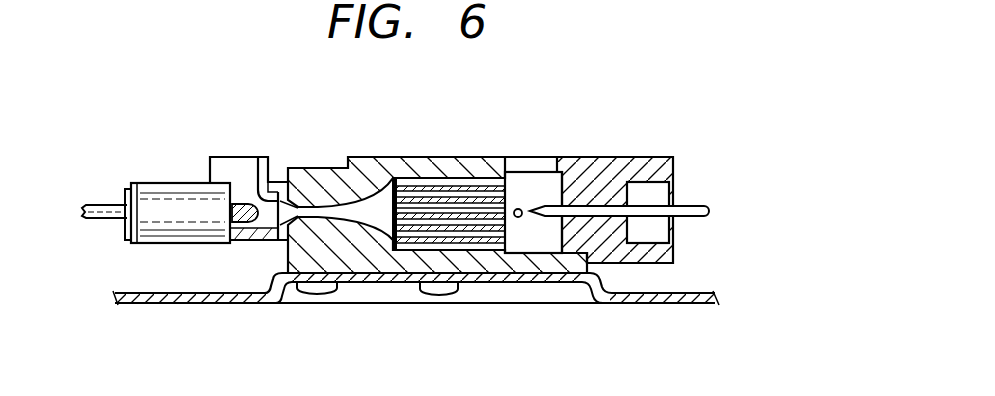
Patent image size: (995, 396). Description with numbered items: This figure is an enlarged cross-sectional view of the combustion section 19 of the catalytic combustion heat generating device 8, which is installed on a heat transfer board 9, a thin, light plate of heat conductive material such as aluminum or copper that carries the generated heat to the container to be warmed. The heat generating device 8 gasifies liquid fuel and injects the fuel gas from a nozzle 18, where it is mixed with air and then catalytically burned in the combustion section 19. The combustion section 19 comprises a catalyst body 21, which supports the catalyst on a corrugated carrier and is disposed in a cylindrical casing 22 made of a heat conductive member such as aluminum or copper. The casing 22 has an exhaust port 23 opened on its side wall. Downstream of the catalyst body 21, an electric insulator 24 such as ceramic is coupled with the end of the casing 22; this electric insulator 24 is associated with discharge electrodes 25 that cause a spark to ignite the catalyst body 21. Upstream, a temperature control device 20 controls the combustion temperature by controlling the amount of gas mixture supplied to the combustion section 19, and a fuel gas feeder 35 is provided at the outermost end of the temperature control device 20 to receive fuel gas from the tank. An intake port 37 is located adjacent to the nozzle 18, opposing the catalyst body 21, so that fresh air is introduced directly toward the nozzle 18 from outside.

The catalytic combustion heat generating device 8 is at (437, 223).
The heat transfer board 9 is at (643, 300).
The nozzle 18 is at (272, 180).
The combustion section 19 is at (380, 218).
The temperature control device 20 is at (185, 197).
The catalyst body 21 is at (458, 192).
The casing 22 is at (413, 167).
The exhaust port 23 is at (530, 165).
The electric insulator 24 is at (613, 167).
The discharge electrodes 25 is at (543, 215).
The fuel gas feeder 35 is at (102, 210).
The intake port 37 is at (243, 168).